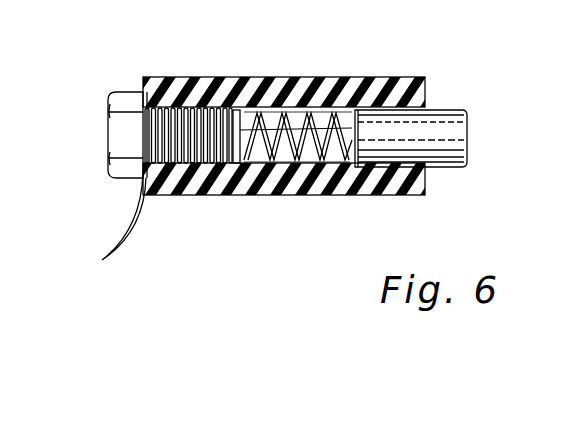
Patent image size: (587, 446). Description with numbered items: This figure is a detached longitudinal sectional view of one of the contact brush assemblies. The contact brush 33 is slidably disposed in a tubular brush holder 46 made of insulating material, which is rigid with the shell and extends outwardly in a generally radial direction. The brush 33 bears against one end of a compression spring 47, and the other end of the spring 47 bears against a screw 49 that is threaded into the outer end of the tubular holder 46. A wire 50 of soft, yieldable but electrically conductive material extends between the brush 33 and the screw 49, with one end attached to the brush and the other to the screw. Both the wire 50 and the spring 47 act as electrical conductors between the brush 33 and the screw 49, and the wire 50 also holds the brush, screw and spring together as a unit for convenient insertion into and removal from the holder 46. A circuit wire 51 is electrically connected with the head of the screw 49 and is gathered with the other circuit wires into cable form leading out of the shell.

The contact brush 33 is at (445, 125).
The tubular brush holder 46 is at (315, 79).
The compression spring 47 is at (280, 195).
The screw 49 is at (120, 128).
The wire 50 is at (298, 128).
The circuit wire 51 is at (122, 230).